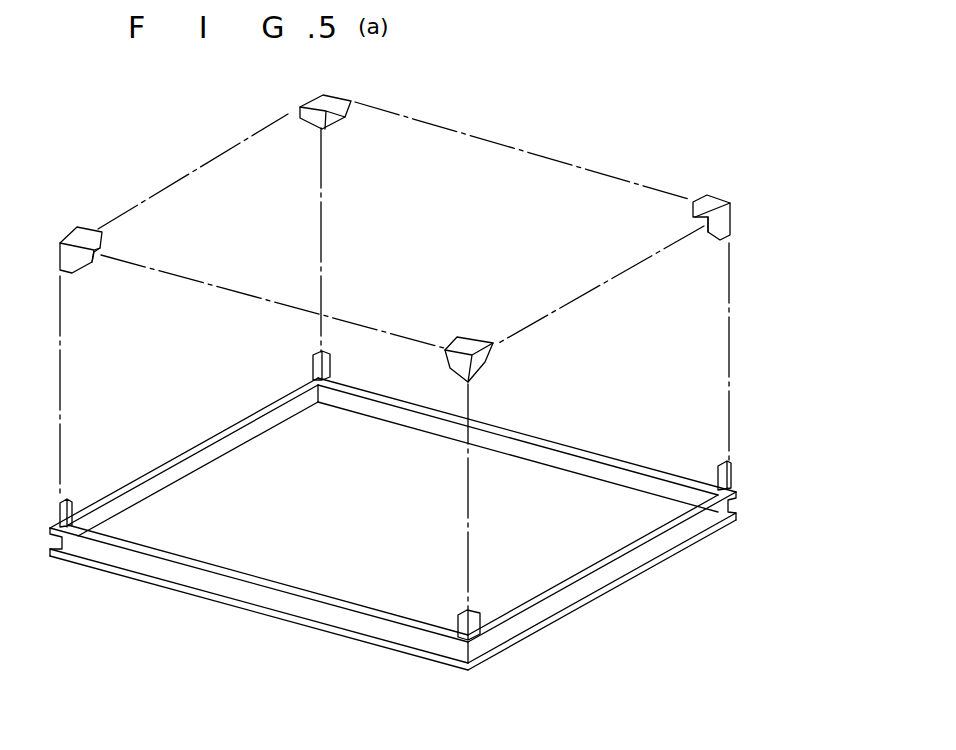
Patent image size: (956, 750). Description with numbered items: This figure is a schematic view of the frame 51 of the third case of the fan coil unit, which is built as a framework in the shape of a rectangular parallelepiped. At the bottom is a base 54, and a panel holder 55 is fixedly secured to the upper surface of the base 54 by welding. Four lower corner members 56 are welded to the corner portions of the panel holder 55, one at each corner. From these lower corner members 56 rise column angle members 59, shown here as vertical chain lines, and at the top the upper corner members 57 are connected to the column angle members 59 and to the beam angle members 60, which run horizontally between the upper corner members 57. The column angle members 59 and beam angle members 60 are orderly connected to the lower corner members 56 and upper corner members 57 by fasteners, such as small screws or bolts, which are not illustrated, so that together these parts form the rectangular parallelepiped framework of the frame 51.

The frame 51 is at (574, 129).
The base 54 is at (243, 605).
The panel holder 55 is at (281, 578).
The lower corner members 56 is at (310, 364).
The upper corner members 57 is at (300, 105).
The column angle members 59 is at (323, 230).
The beam angle members 60 is at (218, 285).